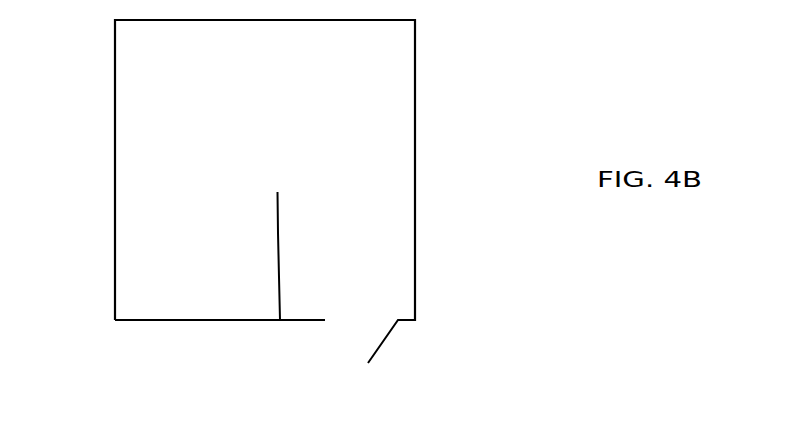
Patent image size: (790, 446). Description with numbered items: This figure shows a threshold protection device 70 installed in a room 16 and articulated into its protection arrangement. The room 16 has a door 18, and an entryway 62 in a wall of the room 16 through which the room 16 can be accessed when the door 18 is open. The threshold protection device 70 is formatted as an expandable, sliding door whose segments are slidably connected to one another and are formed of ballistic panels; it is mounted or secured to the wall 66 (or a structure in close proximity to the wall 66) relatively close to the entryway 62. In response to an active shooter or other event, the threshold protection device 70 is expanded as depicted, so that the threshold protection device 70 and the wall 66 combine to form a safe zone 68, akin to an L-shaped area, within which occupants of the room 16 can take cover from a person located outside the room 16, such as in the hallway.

The room 16 is at (88, 59).
The door 18 is at (384, 345).
The entryway 62 is at (355, 333).
The wall 66 is at (143, 322).
The safe zone 68 is at (196, 170).
The threshold protection device 70 is at (288, 220).